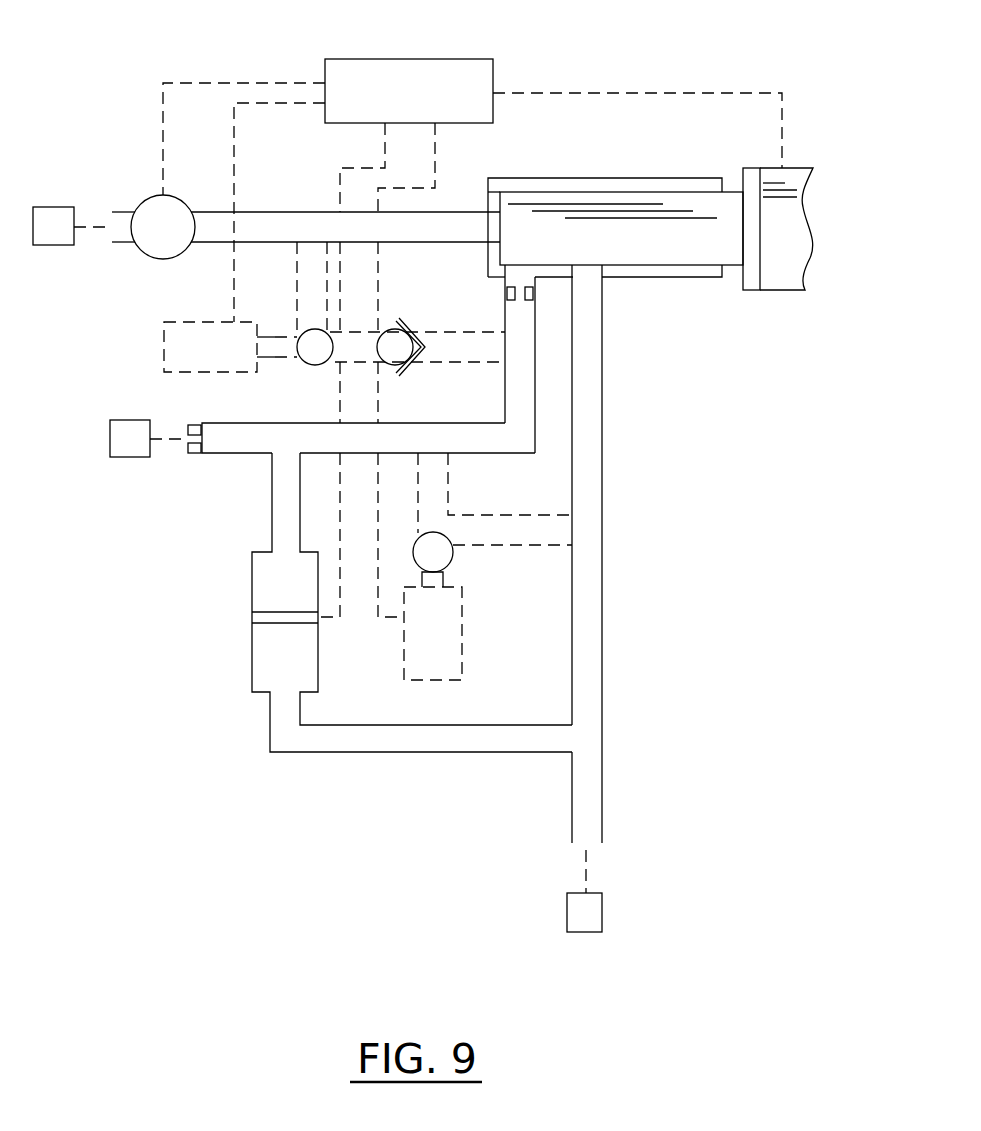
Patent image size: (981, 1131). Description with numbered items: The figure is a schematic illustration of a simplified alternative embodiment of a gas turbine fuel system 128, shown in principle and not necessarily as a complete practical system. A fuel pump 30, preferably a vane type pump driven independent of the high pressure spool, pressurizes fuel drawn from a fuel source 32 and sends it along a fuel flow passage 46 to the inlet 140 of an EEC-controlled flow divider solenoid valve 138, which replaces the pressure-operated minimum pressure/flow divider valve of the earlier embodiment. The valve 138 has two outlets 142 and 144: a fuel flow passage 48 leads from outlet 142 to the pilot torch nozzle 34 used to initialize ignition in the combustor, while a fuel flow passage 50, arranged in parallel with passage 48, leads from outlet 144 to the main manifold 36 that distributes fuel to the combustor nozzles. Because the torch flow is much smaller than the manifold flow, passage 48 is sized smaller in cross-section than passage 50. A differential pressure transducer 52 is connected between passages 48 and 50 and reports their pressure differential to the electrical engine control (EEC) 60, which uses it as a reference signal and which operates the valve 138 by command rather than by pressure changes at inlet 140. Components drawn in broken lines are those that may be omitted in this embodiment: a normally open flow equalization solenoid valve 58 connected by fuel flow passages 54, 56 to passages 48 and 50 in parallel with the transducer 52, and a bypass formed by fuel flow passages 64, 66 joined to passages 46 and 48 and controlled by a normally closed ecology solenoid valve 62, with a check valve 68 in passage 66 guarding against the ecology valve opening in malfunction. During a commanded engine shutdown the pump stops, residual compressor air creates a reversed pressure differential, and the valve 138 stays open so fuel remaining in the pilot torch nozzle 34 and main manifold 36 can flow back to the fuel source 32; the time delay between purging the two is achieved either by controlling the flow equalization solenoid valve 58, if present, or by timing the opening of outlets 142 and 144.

The fuel pump 30 is at (145, 201).
The fuel source 32 is at (50, 207).
The pilot torch nozzle 34 is at (130, 458).
The main manifold 36 is at (602, 912).
The fuel flow passage 46 is at (273, 212).
The fuel flow passage 48 is at (230, 423).
The fuel flow passage 50 is at (602, 552).
The differential pressure transducer 52 is at (252, 657).
The fuel flow passage 54 is at (450, 485).
The fuel flow passage 56 is at (512, 547).
The flow equalization solenoid valve 58 is at (462, 652).
The electrical engine control (EEC) 60 is at (364, 59).
The ecology solenoid valve 62 is at (163, 343).
The fuel flow passage 64 is at (297, 260).
The fuel flow passage 66 is at (450, 363).
The check valve 68 is at (398, 322).
The fuel system 128 is at (566, 79).
The flow divider solenoid valve 138 is at (600, 178).
The inlet 140 is at (490, 230).
The outlet 142 is at (515, 278).
The outlet 144 is at (587, 273).